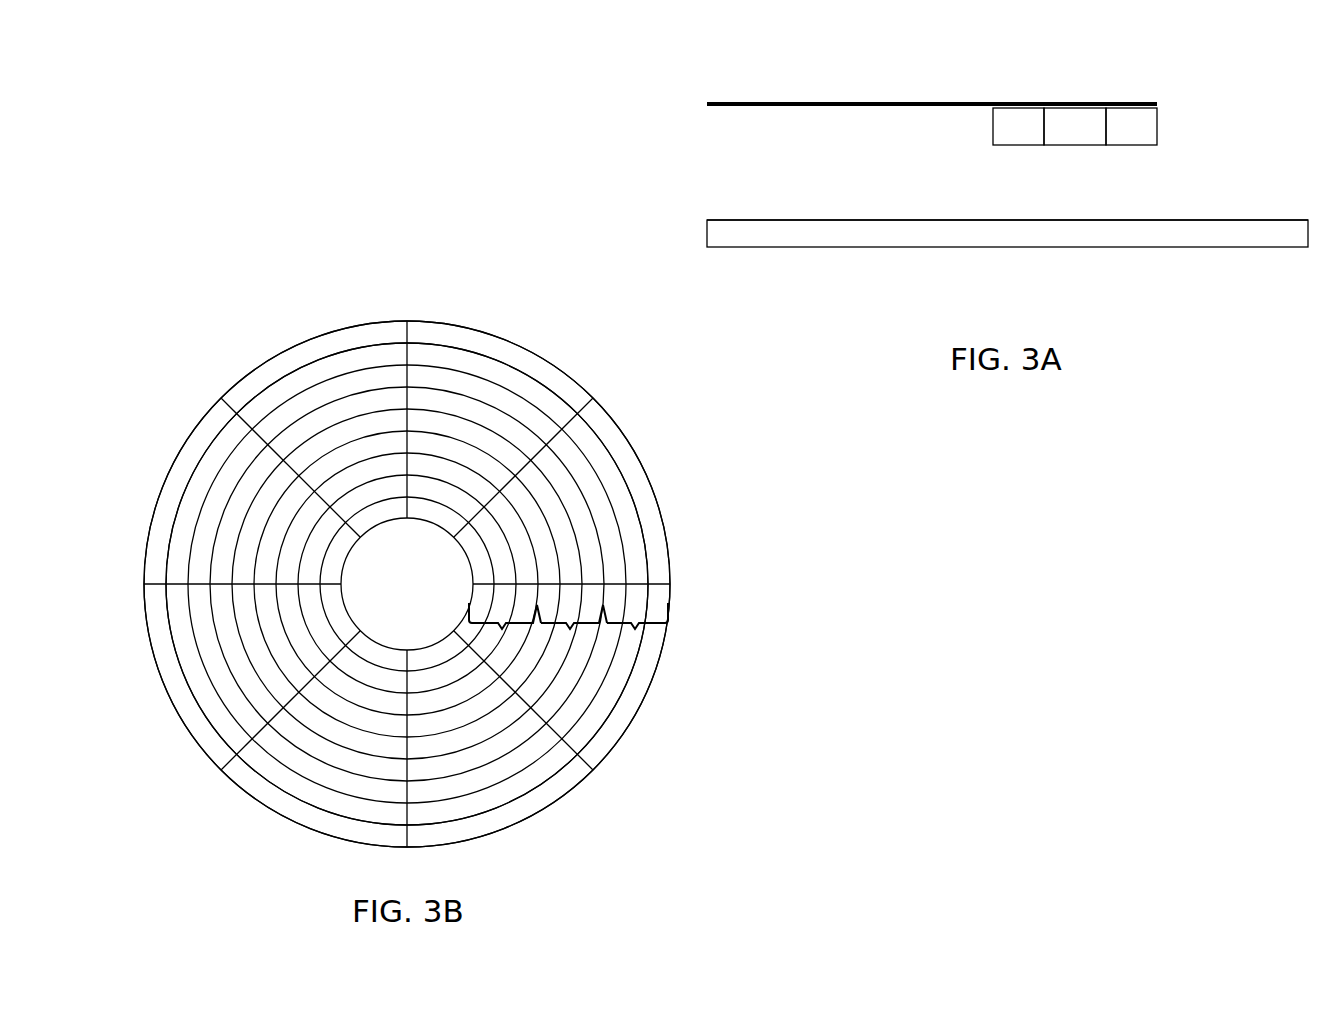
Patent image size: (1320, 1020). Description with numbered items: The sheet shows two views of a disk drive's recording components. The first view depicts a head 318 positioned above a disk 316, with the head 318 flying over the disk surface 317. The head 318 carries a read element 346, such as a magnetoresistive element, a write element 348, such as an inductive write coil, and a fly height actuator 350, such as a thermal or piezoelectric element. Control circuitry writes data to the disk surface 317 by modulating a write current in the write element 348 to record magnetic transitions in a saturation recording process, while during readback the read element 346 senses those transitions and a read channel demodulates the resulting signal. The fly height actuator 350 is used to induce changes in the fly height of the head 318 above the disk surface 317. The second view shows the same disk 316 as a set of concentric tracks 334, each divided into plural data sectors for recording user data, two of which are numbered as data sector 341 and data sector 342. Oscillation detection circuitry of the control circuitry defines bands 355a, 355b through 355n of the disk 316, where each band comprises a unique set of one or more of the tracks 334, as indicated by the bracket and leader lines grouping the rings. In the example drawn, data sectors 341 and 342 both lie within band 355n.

In FIG. 3A, the disk 316 is at (707, 221).
In FIG. 3B, the disk 316 is at (158, 418).
In FIG. 3A, the disk surface 317 is at (893, 215).
In FIG. 3A, the head 318 is at (1174, 109).
In FIG. 3A, the read element 346 is at (1000, 107).
In FIG. 3A, the fly height actuator 350 is at (1062, 107).
In FIG. 3A, the write element 348 is at (1125, 107).
In FIG. 3B, the concentric tracks 334 is at (297, 360).
In FIG. 3B, the data sector 341 is at (641, 493).
In FIG. 3B, the data sector 342 is at (525, 382).
In FIG. 3B, the band 355a is at (502, 626).
In FIG. 3B, the band 355b is at (570, 626).
In FIG. 3B, the band 355n is at (635, 626).